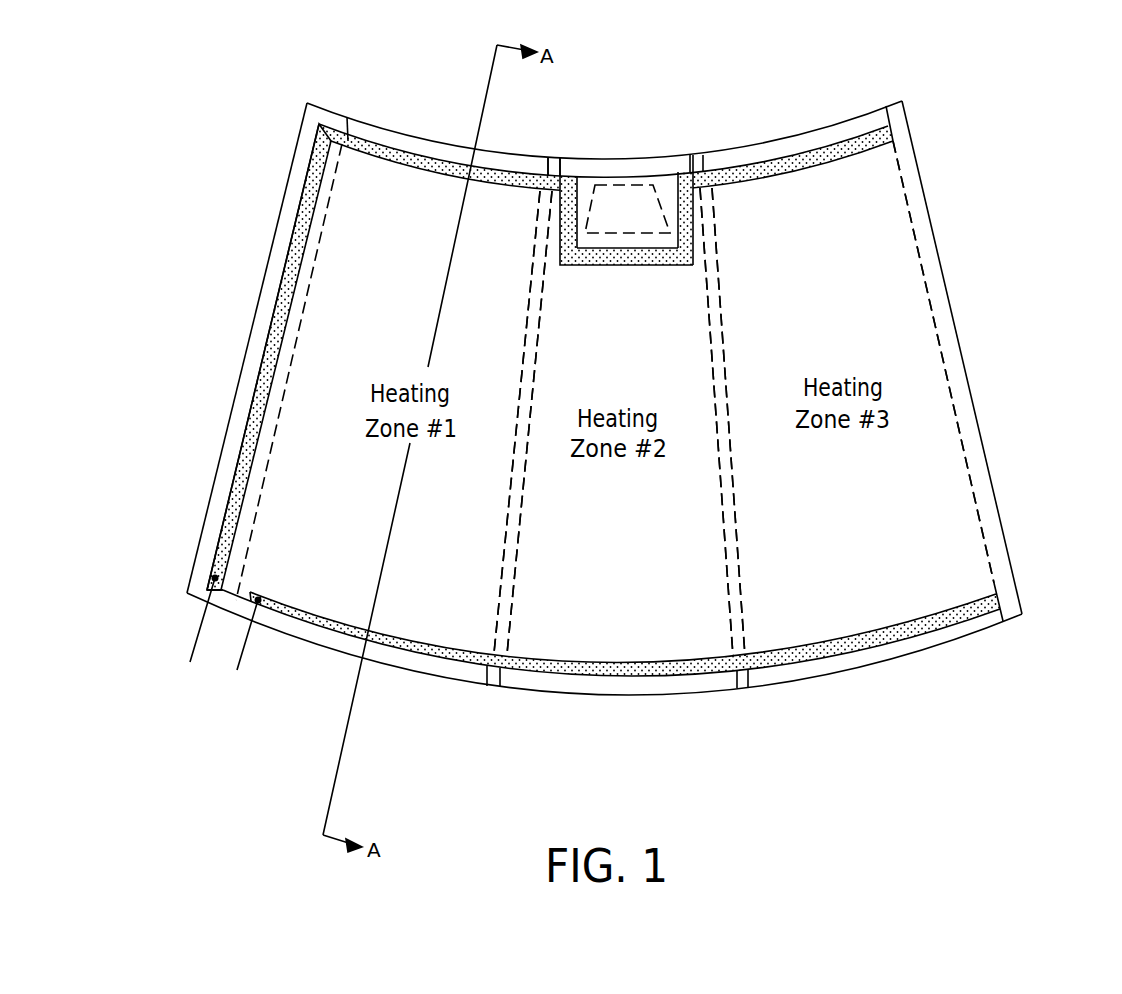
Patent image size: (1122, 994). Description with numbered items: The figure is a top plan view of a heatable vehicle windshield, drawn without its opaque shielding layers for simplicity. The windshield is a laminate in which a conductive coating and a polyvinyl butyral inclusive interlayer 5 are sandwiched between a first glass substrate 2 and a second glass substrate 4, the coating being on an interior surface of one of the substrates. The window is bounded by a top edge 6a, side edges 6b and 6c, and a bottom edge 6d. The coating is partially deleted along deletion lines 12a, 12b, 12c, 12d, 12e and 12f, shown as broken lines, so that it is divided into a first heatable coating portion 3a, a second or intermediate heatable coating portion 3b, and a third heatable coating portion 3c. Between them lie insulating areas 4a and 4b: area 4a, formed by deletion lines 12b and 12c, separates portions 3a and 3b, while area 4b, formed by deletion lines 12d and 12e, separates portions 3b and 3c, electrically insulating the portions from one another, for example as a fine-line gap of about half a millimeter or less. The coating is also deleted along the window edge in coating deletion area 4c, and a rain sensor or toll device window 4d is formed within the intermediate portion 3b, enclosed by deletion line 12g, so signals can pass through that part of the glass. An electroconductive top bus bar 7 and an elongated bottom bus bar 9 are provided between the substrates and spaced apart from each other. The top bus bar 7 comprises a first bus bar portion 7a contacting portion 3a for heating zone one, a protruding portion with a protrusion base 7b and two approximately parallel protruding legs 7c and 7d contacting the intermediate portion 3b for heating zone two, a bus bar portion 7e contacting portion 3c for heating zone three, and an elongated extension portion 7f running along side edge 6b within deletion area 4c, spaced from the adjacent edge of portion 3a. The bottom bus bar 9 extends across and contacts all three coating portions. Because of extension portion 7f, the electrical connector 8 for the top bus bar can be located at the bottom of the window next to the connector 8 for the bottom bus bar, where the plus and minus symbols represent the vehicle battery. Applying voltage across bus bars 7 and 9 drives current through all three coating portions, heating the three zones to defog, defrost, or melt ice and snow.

The first glass substrate 2 is at (338, 246).
The second glass substrate 4 is at (603, 150).
The first heatable coating portion 3a is at (340, 303).
The second or intermediate heatable coating portion 3b is at (630, 640).
The third heatable coating portion 3c is at (898, 233).
The insulating area 4a is at (538, 343).
The insulating area 4b is at (718, 306).
The coating deletion area 4c is at (283, 360).
The rain sensor or toll device window 4d is at (637, 197).
The polyvinyl butyral inclusive interlayer 5 is at (347, 190).
The top side/edge 6a is at (794, 134).
The side edge 6b is at (216, 480).
The side edge 6c is at (990, 469).
The bottom side/edge 6d is at (805, 685).
The top bus bar 7 is at (518, 172).
The first bus bar portion 7a is at (522, 191).
The protrusion base 7b is at (612, 262).
The protruding leg 7c is at (580, 196).
The protruding leg 7d is at (700, 235).
The bus bar portion 7e is at (848, 145).
The elongated extension portion 7f is at (232, 533).
The electrical connector 8 is at (200, 631).
The bottom bus bar 9 is at (552, 672).
The deletion line 12a is at (270, 437).
The deletion line 12b is at (493, 593).
The deletion line 12c is at (512, 548).
The deletion line 12d is at (730, 598).
The deletion line 12e is at (738, 548).
The deletion line 12f is at (963, 440).
The deletion line 12g is at (675, 177).